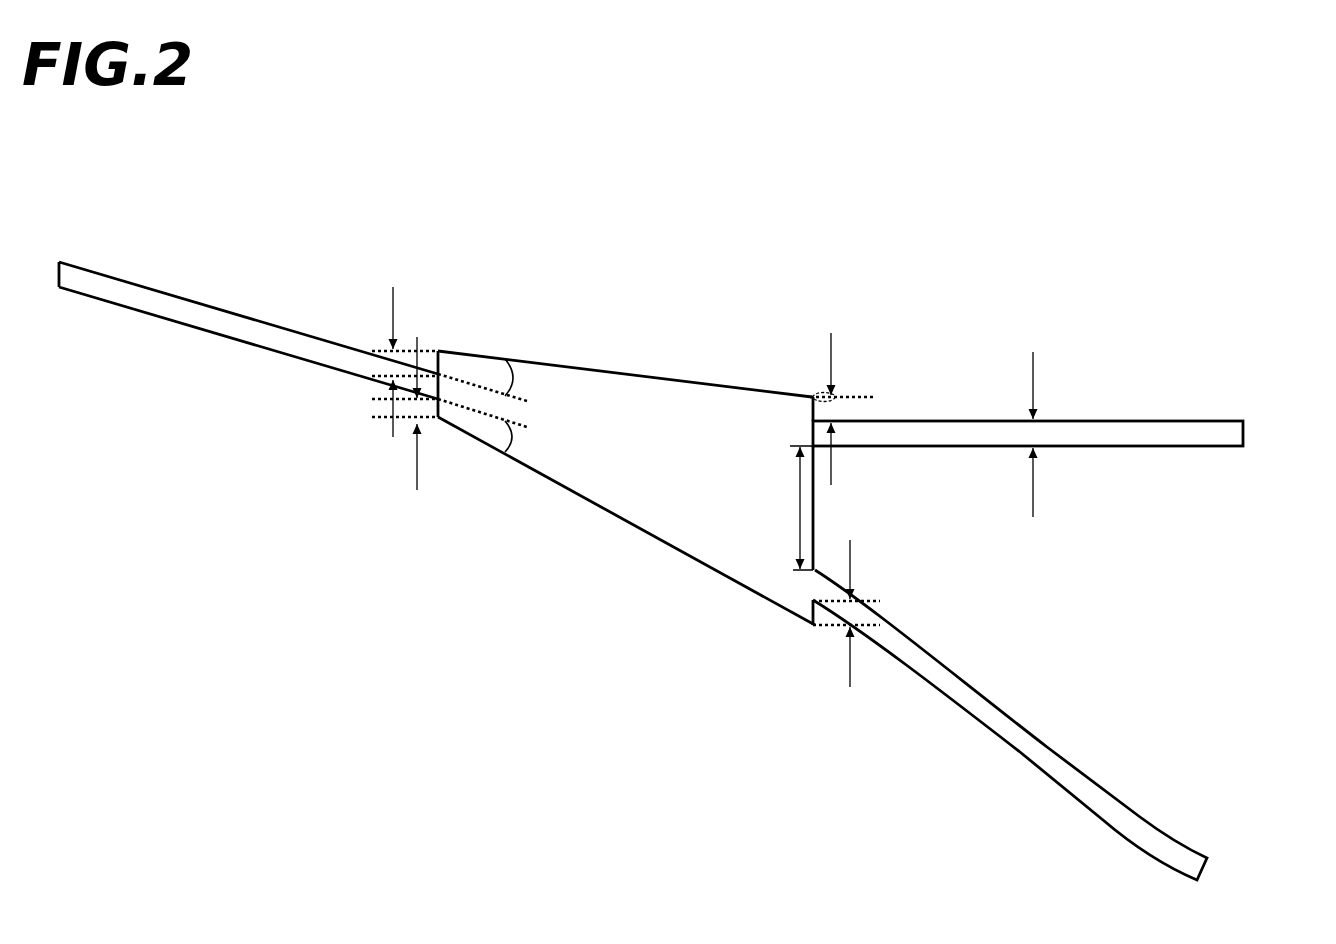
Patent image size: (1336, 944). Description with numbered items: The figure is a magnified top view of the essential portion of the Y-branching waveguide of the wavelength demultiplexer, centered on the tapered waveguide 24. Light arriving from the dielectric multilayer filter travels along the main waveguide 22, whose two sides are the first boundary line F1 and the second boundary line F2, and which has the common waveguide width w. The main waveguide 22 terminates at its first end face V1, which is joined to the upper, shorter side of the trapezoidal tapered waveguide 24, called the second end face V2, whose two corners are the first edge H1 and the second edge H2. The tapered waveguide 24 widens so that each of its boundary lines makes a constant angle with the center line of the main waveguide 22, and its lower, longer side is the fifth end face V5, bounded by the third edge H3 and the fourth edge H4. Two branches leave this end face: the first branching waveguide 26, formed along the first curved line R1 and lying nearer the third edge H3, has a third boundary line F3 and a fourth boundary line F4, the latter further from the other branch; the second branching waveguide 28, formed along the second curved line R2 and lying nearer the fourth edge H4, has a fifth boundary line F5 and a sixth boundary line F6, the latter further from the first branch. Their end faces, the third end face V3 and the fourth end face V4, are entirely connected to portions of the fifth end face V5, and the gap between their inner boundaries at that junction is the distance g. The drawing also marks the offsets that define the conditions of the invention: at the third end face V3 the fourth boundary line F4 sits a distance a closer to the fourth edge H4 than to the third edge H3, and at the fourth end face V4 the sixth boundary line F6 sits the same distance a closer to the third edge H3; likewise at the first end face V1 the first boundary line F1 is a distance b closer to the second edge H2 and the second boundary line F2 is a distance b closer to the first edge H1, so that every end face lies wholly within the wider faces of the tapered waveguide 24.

The main waveguide 22 is at (200, 312).
The tapered waveguide 24 is at (697, 535).
The first branching waveguide 26 is at (1066, 333).
The second branching waveguide 28 is at (1010, 725).
The first curved line R1 is at (1174, 430).
The second curved line R2 is at (908, 647).
The first boundary line F1 is at (360, 350).
The second boundary line F2 is at (287, 355).
The third boundary line F3 is at (957, 447).
The fourth boundary line F4 is at (947, 421).
The fifth boundary line F5 is at (898, 626).
The sixth boundary line F6 is at (872, 640).
The first edge H1 is at (440, 351).
The second edge H2 is at (440, 420).
The third edge H3 is at (816, 432).
The fourth edge H4 is at (813, 626).
The first end face V1 is at (428, 349).
The second end face V2 is at (437, 368).
The third end face V3 is at (815, 397).
The fourth end face V4 is at (813, 585).
The fifth end face V5 is at (817, 503).
The distance a is at (838, 412).
The distance b is at (380, 408).
The distance g is at (788, 508).
The waveguide width w is at (1053, 434).